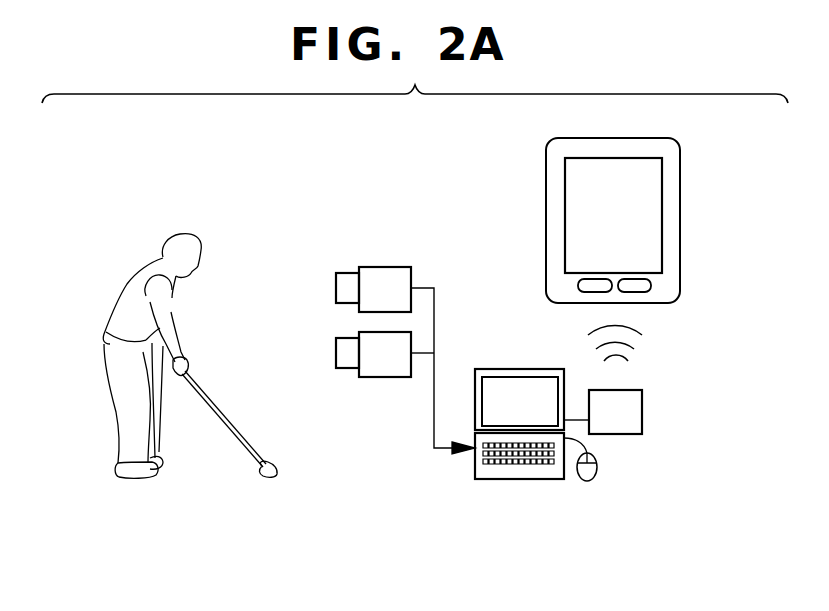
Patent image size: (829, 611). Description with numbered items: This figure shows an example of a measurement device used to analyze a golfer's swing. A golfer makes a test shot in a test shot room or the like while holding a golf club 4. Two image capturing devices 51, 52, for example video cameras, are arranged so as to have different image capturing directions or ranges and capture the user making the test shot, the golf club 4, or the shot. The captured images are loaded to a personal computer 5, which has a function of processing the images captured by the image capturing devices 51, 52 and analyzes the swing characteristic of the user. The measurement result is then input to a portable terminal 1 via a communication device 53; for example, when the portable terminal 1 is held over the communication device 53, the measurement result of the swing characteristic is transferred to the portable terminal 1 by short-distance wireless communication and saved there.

The portable terminal 1 is at (680, 211).
The golf club 4 is at (230, 428).
The personal computer 5 is at (517, 479).
The image capturing device 51 is at (358, 267).
The image capturing device 52 is at (358, 332).
The communication device 53 is at (642, 408).